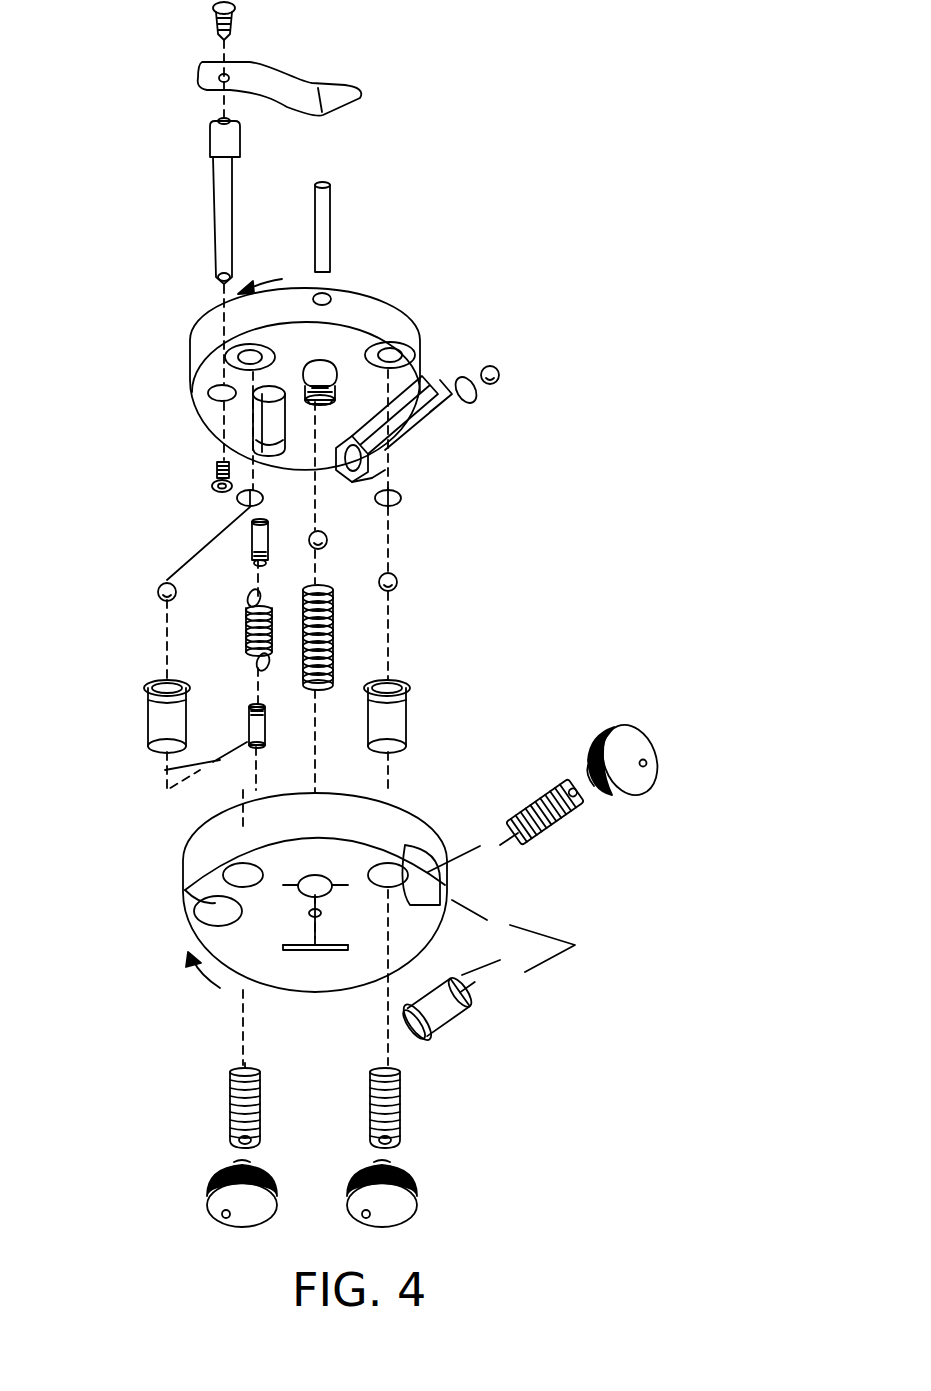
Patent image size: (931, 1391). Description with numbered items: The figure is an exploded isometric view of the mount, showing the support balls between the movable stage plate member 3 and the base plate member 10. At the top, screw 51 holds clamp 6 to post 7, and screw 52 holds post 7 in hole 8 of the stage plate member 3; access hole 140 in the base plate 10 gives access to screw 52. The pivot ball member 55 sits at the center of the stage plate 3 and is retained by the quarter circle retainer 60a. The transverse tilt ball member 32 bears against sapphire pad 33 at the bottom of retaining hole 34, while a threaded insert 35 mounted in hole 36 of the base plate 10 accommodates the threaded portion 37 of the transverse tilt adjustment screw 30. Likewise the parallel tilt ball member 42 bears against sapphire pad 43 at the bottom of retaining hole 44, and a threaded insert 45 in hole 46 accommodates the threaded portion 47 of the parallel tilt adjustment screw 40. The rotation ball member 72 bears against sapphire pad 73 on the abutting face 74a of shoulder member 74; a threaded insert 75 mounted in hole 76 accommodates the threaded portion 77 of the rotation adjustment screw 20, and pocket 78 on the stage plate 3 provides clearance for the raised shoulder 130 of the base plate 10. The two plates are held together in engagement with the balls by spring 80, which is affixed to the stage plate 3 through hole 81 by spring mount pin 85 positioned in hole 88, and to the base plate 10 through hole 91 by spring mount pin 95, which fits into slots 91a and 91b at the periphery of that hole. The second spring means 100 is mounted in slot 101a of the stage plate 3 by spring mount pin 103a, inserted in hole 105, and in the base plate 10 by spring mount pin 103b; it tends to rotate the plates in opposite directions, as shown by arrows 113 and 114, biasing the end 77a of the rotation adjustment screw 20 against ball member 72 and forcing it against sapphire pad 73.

The screw 51 is at (213, 24).
The clamp 6 is at (272, 78).
The post 7 is at (225, 200).
The spring mount pin 85 is at (332, 203).
The arrow 113 is at (260, 277).
The hole 88 is at (321, 293).
The hole 81 is at (332, 357).
The movable stage plate member 3 is at (338, 378).
The quarter circle retainer 60a is at (340, 395).
The retaining hole 44 is at (235, 355).
The retaining hole 34 is at (403, 350).
The hole 8 is at (212, 395).
The hole 105 is at (250, 398).
The slot 101a is at (248, 428).
The pocket 78 is at (450, 392).
The shoulder member 74 is at (357, 445).
The abutting face 74a is at (393, 468).
The rotation ball member 72 is at (503, 372).
The sapphire pad 73 is at (470, 402).
The screw 52 is at (213, 471).
The sapphire pad 43 is at (237, 498).
The sapphire pad 33 is at (402, 496).
The pivot ball member 55 is at (325, 543).
The spring mount pin 103a is at (252, 538).
The parallel tilt ball member 42 is at (158, 590).
The transverse tilt ball member 32 is at (397, 580).
The second spring means 100 is at (248, 625).
The spring 80 is at (333, 632).
The spring mount pin 103b is at (257, 707).
The threaded insert 45 is at (155, 720).
The threaded insert 35 is at (407, 714).
The rotation adjustment screw 20 is at (633, 742).
The threaded portion 77 is at (562, 815).
The end of rotation adjustment screw 77a is at (510, 830).
The hole 36 is at (387, 870).
The raised shoulder 130 is at (423, 857).
The hole 76 is at (447, 893).
The hole 46 is at (225, 870).
The base plate member 10 is at (190, 873).
The hole 91 is at (315, 880).
The slot 91a is at (298, 886).
The slot 91b is at (342, 890).
The access hole 140 is at (197, 927).
The arrow 114 is at (222, 990).
The spring mount pin 95 is at (337, 947).
The threaded insert 75 is at (457, 1017).
The threaded portion 47 is at (232, 1090).
The threaded portion 37 is at (398, 1098).
The parallel tilt adjustment screw 40 is at (260, 1213).
The transverse tilt adjustment screw 30 is at (397, 1213).